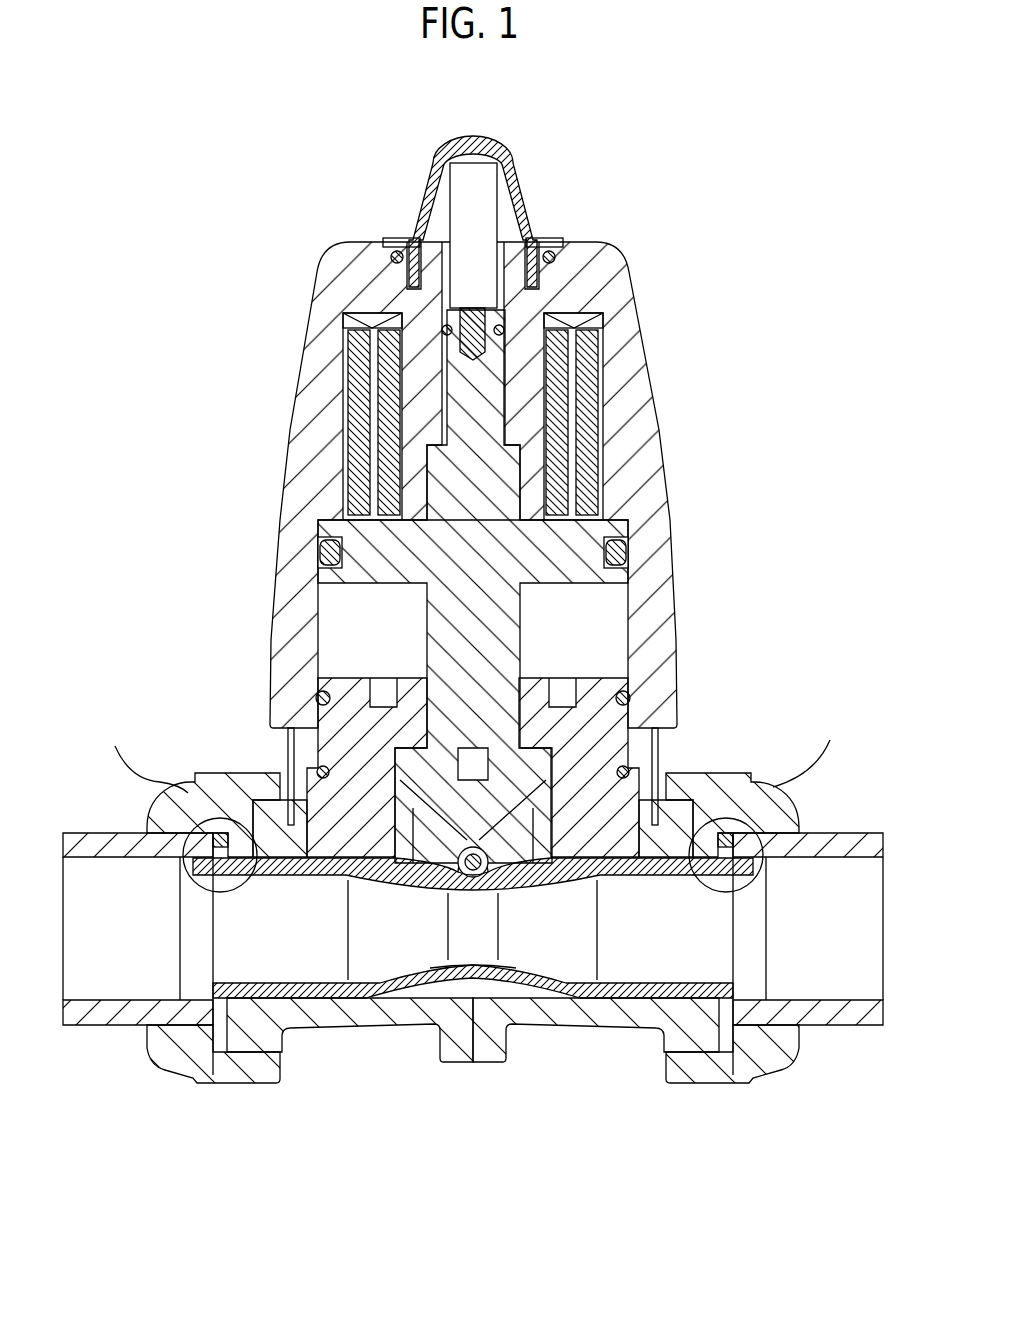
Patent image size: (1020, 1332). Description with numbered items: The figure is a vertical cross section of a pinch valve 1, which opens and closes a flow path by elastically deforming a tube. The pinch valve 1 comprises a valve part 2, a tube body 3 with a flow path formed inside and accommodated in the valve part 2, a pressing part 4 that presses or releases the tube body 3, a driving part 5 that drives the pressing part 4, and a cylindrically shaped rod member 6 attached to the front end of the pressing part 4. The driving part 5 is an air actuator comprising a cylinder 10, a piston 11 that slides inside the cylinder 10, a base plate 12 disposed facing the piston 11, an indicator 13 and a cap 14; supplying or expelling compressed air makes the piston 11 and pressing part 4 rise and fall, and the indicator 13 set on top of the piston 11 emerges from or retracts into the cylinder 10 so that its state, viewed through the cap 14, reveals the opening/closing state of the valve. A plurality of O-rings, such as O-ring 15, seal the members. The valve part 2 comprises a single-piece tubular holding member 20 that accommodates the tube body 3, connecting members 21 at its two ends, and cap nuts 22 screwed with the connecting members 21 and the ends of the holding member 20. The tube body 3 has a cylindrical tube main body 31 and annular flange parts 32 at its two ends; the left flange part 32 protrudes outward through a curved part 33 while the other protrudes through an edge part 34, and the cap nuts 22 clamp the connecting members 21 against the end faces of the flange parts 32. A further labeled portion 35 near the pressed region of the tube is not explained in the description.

The pinch valve 1 is at (761, 210).
The valve part 2 is at (453, 1108).
The tube body 3 is at (523, 998).
The pressing part 4 is at (503, 807).
The driving part 5 is at (266, 363).
The rod member 6 is at (470, 877).
The cylinder 10 is at (337, 265).
The piston 11 is at (345, 528).
The base plate 12 is at (345, 693).
The indicator 13 is at (472, 212).
The cap 14 is at (519, 180).
The O-ring 15 is at (632, 550).
The holding member 20 is at (683, 820).
The connecting member 21 is at (100, 1028).
The cap nut 22 is at (222, 1085).
The tube main body 31 is at (540, 995).
The flange part 32 is at (217, 812).
The curved part 33 is at (198, 888).
The edge part 34 is at (737, 887).
The valve seat 35 is at (487, 868).